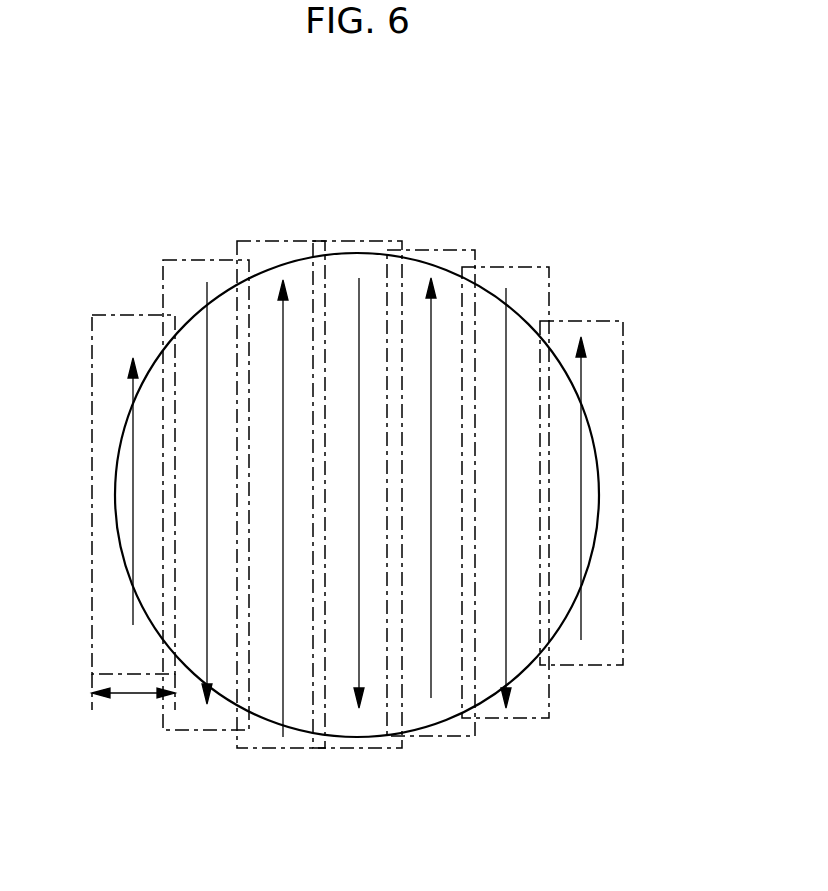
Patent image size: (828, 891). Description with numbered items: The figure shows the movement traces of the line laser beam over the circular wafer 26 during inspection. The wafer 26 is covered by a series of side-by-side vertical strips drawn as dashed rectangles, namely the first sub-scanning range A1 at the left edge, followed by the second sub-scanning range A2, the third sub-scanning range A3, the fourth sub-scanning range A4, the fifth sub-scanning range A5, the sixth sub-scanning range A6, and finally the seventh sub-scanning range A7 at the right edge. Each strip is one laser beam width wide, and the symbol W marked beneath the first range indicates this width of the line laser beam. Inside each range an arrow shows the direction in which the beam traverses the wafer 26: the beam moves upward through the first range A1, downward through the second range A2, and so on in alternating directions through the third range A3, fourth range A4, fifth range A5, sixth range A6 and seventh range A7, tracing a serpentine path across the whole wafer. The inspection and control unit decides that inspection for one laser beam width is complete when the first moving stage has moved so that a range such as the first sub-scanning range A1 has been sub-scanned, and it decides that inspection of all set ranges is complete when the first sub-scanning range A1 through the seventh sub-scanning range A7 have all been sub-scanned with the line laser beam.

The wafer 26 is at (598, 468).
The first sub-scanning range A1 is at (133, 315).
The second sub-scanning range A2 is at (210, 258).
The third sub-scanning range A3 is at (283, 240).
The fourth sub-scanning range A4 is at (360, 240).
The fifth sub-scanning range A5 is at (435, 250).
The sixth sub-scanning range A6 is at (510, 267).
The seventh sub-scanning range A7 is at (590, 320).
The width of the line laser beam W is at (133, 700).